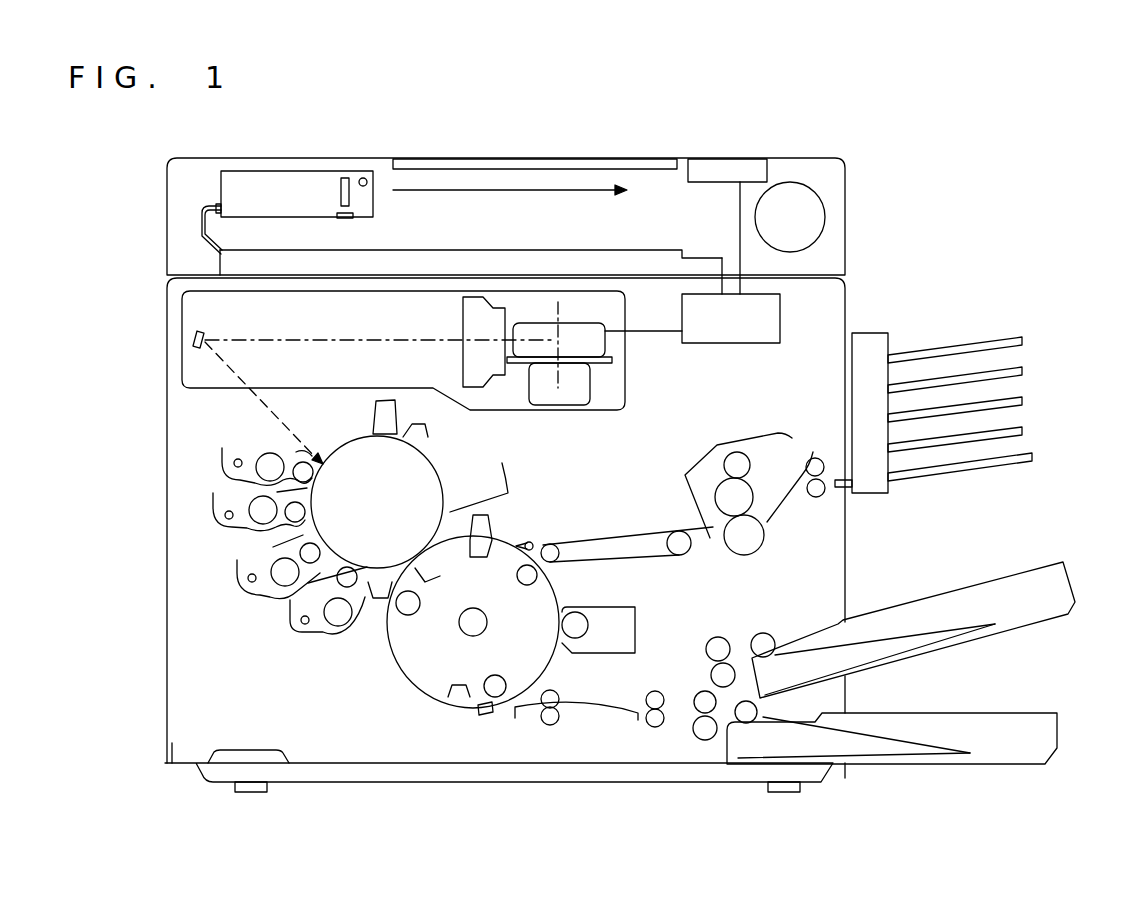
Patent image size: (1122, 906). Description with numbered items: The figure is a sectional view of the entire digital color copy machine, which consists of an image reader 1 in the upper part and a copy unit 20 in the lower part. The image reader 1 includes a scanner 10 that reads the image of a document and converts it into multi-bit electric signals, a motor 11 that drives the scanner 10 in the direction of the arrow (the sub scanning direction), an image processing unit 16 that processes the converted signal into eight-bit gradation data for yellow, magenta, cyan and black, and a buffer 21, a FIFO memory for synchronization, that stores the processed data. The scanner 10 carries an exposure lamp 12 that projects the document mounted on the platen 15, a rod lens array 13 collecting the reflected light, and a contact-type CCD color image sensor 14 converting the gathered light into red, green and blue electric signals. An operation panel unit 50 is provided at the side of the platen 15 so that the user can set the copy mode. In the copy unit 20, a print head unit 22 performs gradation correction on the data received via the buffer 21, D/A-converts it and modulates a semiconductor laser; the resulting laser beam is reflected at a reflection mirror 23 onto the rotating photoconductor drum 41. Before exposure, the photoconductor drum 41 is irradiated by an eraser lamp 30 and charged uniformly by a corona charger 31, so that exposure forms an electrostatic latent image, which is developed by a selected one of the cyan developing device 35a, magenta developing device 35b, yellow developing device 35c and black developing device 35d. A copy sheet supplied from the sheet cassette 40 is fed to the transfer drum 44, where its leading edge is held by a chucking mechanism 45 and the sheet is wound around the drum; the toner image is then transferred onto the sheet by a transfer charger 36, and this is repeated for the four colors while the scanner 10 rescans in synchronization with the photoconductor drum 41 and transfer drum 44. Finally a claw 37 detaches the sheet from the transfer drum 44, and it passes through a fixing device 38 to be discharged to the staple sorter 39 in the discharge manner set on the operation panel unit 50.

The image reader 1 is at (166, 208).
The scanner 10 is at (267, 170).
The motor 11 is at (826, 217).
The exposure lamp 12 is at (364, 177).
The rod lens array 13 is at (340, 190).
The contact-type CCD color image sensor 14 is at (348, 219).
The platen 15 is at (605, 158).
The image processing unit 16 is at (220, 262).
The copy unit 20 is at (166, 425).
The buffer 21 is at (775, 320).
The print head unit 22 is at (608, 345).
The reflection mirror 23 is at (207, 333).
The eraser lamp 30 is at (430, 433).
The corona charger 31 is at (378, 412).
The cyan developing device 35a is at (222, 460).
The magenta developing device 35b is at (215, 505).
The yellow developing device 35c is at (235, 573).
The black developing device 35d is at (292, 630).
The transfer charger 36 is at (442, 578).
The claw 37 is at (527, 540).
The fixing device 38 is at (723, 445).
The staple sorter 39 is at (875, 337).
The sheet cassette 40 is at (997, 632).
The photoconductor drum 41 is at (377, 502).
The transfer drum 44 is at (422, 692).
The chucking mechanism 45 is at (490, 718).
The operation panel unit 50 is at (718, 158).